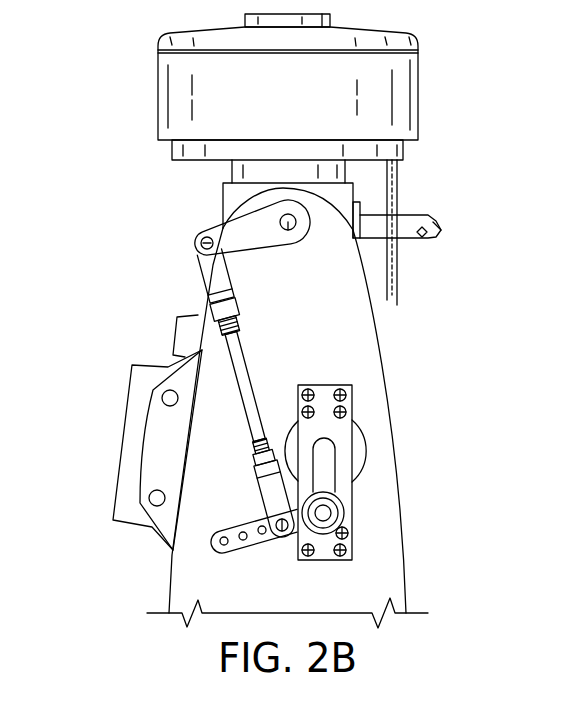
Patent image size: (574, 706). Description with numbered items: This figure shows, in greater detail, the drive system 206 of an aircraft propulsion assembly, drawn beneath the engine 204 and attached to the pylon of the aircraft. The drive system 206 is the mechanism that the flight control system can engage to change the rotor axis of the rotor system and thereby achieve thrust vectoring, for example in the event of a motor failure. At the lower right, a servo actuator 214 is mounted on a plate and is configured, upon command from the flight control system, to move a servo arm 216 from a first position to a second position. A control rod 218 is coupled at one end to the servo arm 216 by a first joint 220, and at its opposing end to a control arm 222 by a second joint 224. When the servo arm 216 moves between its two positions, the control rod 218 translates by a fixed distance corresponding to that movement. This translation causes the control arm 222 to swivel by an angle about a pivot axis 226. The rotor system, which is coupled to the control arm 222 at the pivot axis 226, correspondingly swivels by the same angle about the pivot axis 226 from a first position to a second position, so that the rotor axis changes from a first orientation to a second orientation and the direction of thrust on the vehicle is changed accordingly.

The engine 204 is at (418, 97).
The drive system 206 is at (138, 318).
The servo actuator 214 is at (342, 458).
The servo arm 216 is at (247, 518).
The control rod 218 is at (248, 368).
The first joint 220 is at (282, 534).
The control arm 222 is at (252, 255).
The second joint 224 is at (200, 243).
The pivot axis 226 is at (290, 230).